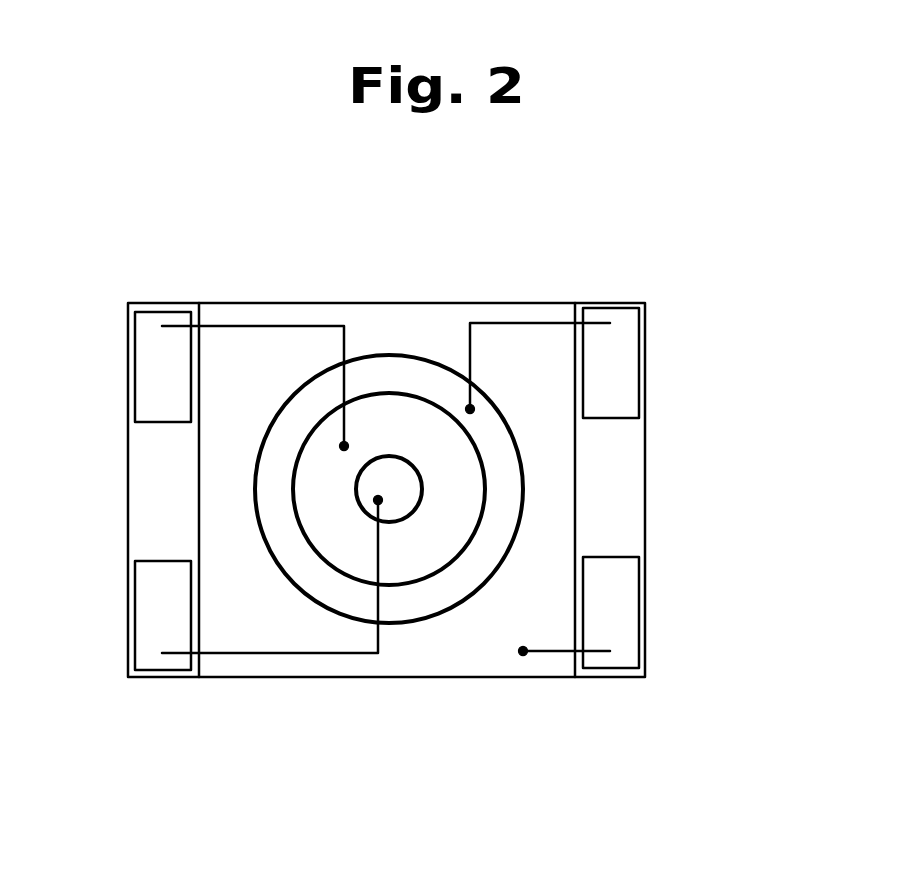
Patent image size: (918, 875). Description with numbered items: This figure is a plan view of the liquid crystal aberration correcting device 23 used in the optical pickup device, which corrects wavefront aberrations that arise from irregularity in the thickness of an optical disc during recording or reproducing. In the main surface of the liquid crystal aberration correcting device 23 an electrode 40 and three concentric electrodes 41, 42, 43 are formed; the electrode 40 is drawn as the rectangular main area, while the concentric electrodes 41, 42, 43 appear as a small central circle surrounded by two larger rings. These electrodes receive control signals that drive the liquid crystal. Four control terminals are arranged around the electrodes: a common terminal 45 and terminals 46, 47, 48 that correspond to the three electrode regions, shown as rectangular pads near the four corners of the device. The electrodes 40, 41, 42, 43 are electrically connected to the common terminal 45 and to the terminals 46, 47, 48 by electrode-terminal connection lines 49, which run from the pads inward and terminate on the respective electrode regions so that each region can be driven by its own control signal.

The liquid crystal aberration correcting device 23 is at (742, 242).
The electrode 40 is at (381, 318).
The concentric electrode 41 is at (365, 494).
The concentric electrode 42 is at (422, 558).
The concentric electrode 43 is at (480, 565).
The common terminal 45 is at (630, 613).
The terminal 46 is at (142, 372).
The terminal 47 is at (142, 614).
The terminal 48 is at (630, 368).
The electrode-terminal connection line 49 is at (246, 326).